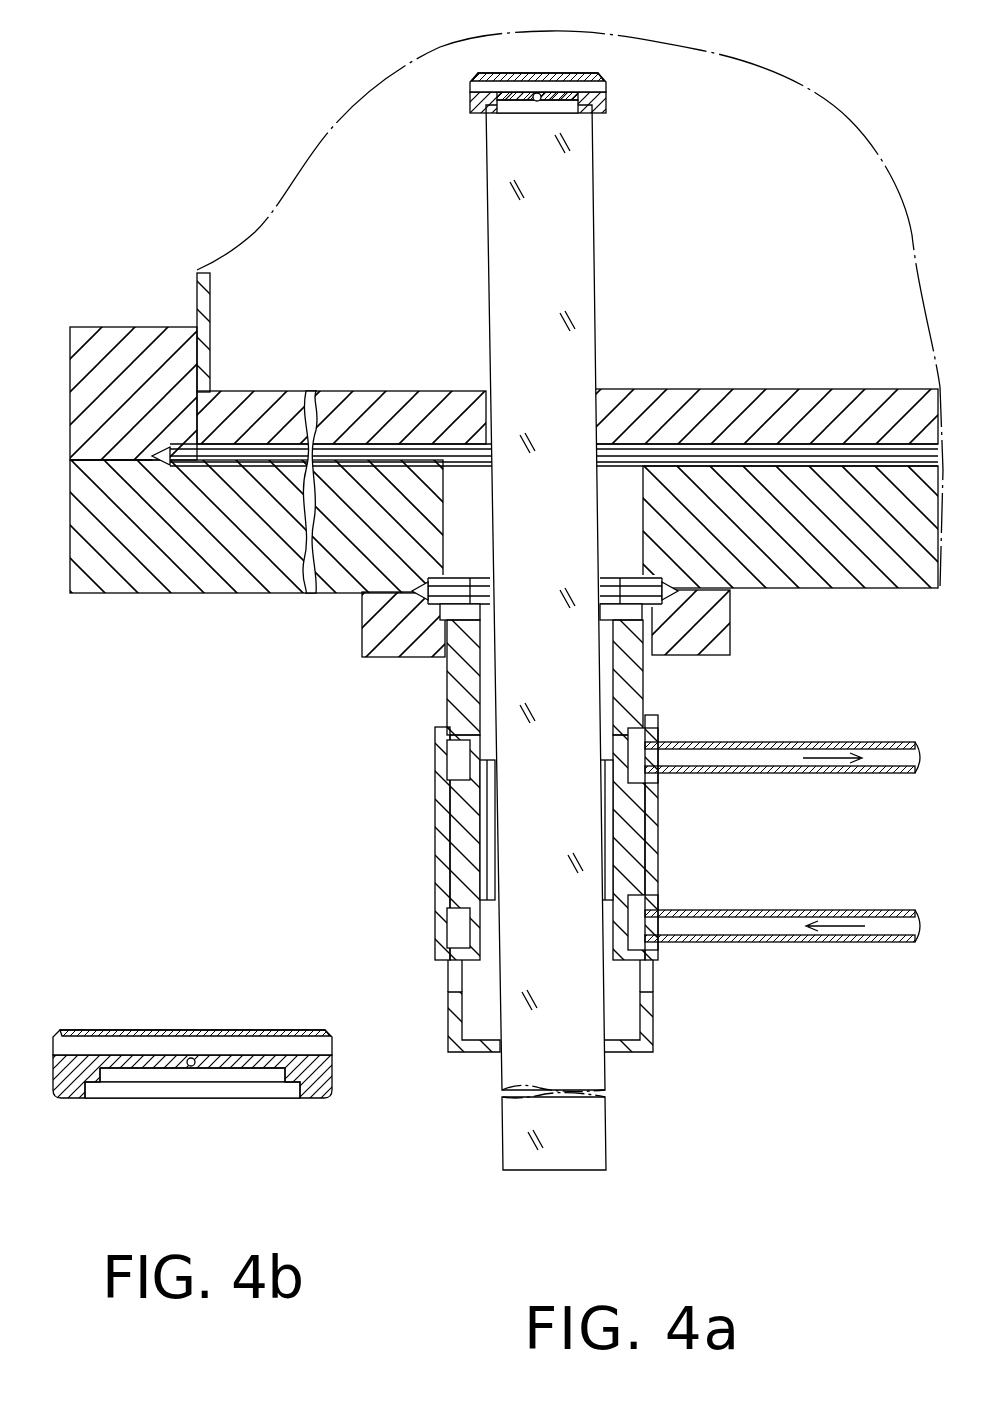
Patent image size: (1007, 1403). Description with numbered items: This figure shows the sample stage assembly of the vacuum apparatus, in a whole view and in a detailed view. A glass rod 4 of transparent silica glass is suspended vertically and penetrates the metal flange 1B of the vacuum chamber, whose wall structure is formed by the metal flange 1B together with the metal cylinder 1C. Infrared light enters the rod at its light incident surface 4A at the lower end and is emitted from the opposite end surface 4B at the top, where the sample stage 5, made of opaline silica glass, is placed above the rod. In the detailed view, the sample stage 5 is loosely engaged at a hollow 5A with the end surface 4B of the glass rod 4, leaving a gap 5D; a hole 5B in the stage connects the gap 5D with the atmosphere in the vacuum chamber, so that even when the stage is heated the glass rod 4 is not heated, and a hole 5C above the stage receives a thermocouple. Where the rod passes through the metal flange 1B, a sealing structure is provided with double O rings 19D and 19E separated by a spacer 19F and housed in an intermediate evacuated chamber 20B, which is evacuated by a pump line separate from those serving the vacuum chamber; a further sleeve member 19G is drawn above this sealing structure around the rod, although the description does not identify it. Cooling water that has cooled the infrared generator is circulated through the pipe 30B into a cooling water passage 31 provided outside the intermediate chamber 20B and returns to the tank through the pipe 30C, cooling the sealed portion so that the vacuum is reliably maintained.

In FIG. 4A, the metal flange 1B is at (792, 390).
In FIG. 4A, the metal cylinder 1C is at (200, 290).
In FIG. 4A, the glass rod 4 is at (560, 268).
In FIG. 4A, the light incident surface 4A is at (565, 1170).
In FIG. 4A, the end surface 4B is at (540, 101).
In FIG. 4A, the sample stage 5 is at (537, 127).
In FIG. 4B, the sample stage 5 is at (225, 1041).
In FIG. 4B, the hollow 5A is at (285, 1098).
In FIG. 4B, the hole 5B is at (191, 1058).
In FIG. 4A, the hole 5C is at (470, 92).
In FIG. 4B, the hole 5C is at (322, 1046).
In FIG. 4B, the gap 5D is at (130, 1068).
In FIG. 4A, the O ring 19D is at (470, 768).
In FIG. 4A, the O ring 19E is at (470, 943).
In FIG. 4A, the spacer 19F is at (490, 835).
In FIG. 4A, the upper sleeve 19G is at (465, 712).
In FIG. 4A, the intermediate evacuated chamber 20B is at (490, 878).
In FIG. 4A, the pipe 30B is at (858, 910).
In FIG. 4A, the pipe 30C is at (858, 742).
In FIG. 4A, the cooling water passage 31 is at (656, 878).